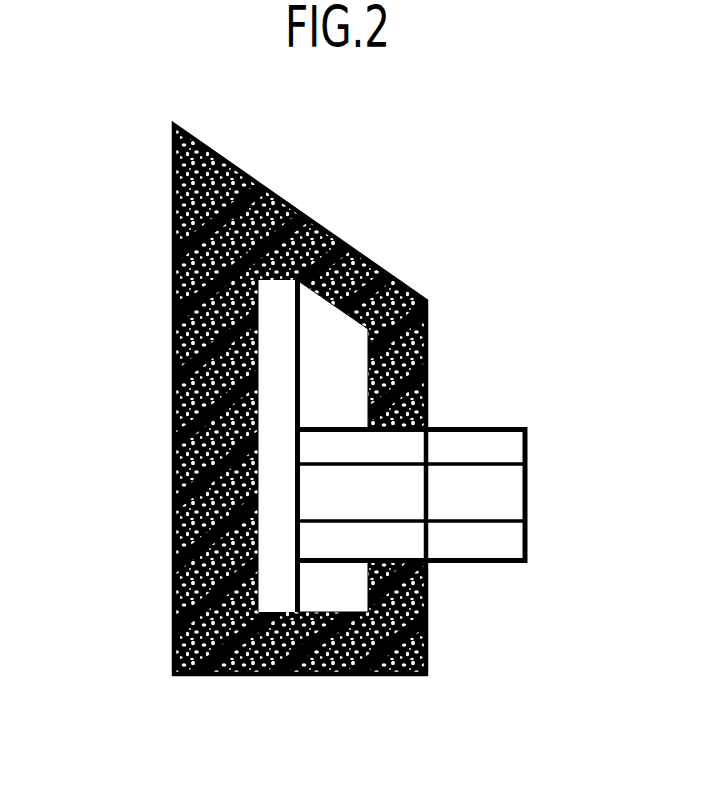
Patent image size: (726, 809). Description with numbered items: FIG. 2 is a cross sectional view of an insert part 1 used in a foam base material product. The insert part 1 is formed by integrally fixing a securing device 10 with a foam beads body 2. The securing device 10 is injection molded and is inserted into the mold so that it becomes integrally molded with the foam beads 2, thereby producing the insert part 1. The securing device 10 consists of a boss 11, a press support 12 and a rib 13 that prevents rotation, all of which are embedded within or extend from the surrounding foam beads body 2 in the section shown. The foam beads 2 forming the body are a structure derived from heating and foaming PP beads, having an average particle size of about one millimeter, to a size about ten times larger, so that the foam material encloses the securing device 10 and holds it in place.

The insert part 1 is at (128, 196).
The foam beads body 2 is at (175, 448).
The securing device 10 is at (452, 566).
The boss 11 is at (490, 497).
The press support 12 is at (273, 365).
The rib 13 is at (332, 340).